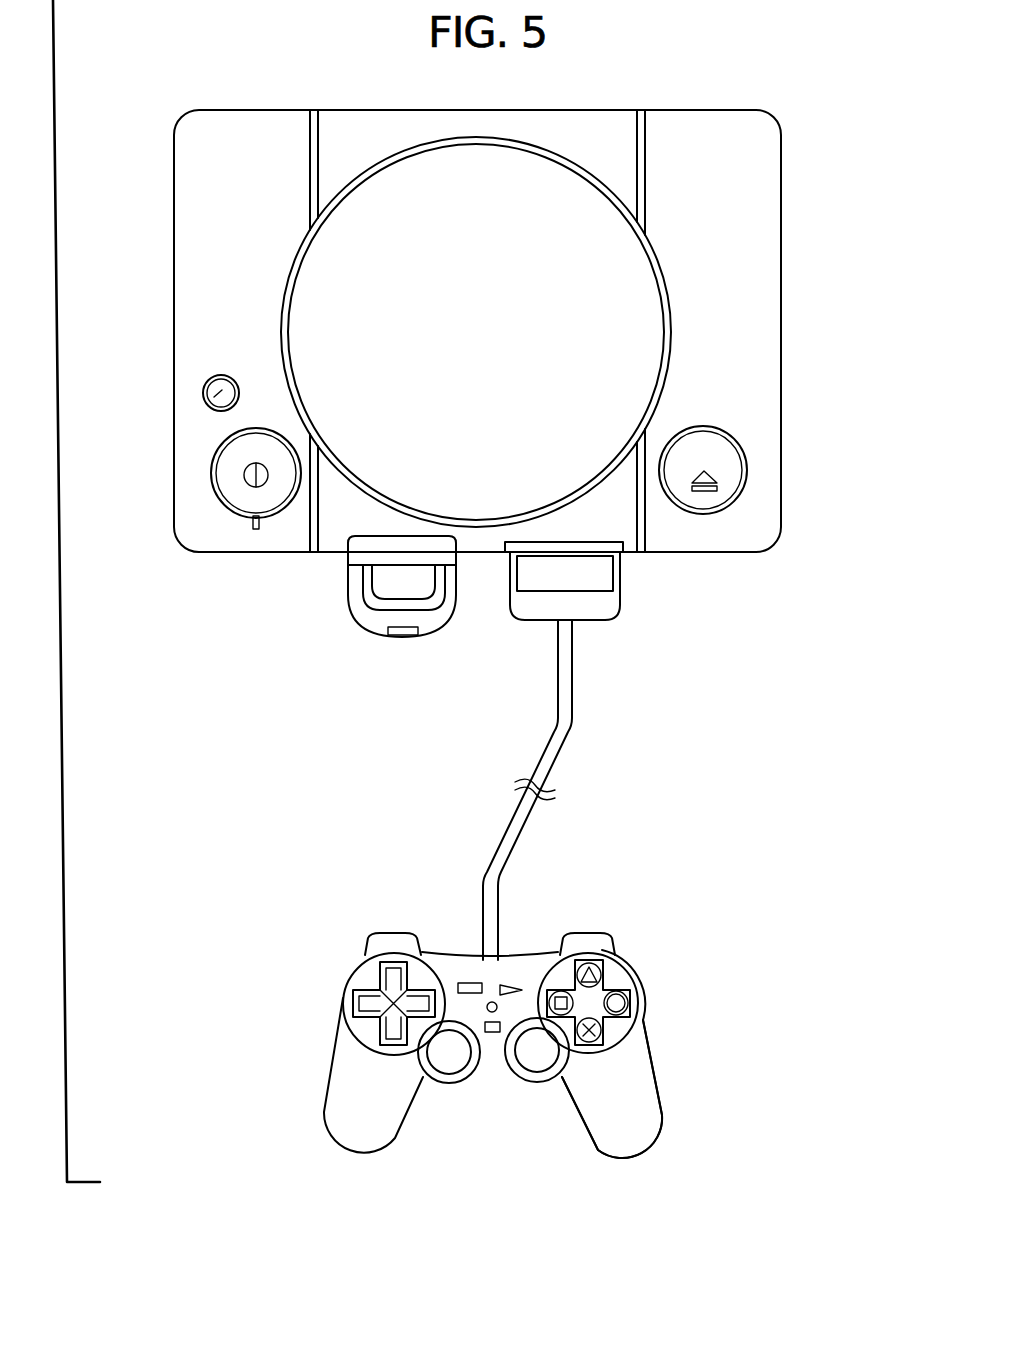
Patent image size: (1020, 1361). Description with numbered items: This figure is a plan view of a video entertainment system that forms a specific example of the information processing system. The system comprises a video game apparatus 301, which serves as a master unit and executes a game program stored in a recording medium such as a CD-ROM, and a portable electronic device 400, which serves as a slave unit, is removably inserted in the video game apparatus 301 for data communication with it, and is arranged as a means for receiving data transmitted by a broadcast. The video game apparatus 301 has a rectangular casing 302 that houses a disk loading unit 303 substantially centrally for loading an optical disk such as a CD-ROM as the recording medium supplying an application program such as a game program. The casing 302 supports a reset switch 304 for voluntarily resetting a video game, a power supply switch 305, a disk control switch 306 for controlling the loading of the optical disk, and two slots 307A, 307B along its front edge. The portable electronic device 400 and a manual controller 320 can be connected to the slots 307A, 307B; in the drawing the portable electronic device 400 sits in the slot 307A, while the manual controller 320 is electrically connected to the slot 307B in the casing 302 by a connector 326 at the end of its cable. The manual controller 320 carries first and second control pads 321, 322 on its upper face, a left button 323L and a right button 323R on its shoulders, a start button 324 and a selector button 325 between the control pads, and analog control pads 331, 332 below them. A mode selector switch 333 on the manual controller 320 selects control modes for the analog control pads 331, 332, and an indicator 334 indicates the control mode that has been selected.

The video game apparatus 301 is at (591, 93).
The casing 302 is at (749, 554).
The disk loading unit 303 is at (470, 180).
The reset switch 304 is at (214, 399).
The power supply switch 305 is at (232, 469).
The disk control switch 306 is at (730, 468).
The slot 307A is at (347, 553).
The slot 307B is at (623, 553).
The portable electronic device 400 is at (364, 632).
The connector 326 is at (592, 605).
The manual controller 320 is at (672, 1058).
The first control pad 321 is at (362, 978).
The second control pad 322 is at (620, 975).
The left button 323L is at (394, 907).
The right button 323R is at (590, 915).
The start button 324 is at (515, 983).
The selector button 325 is at (462, 983).
The analog control pad 331 is at (428, 1112).
The analog control pad 332 is at (555, 1112).
The mode selector switch 333 is at (488, 1011).
The indicator 334 is at (492, 1033).